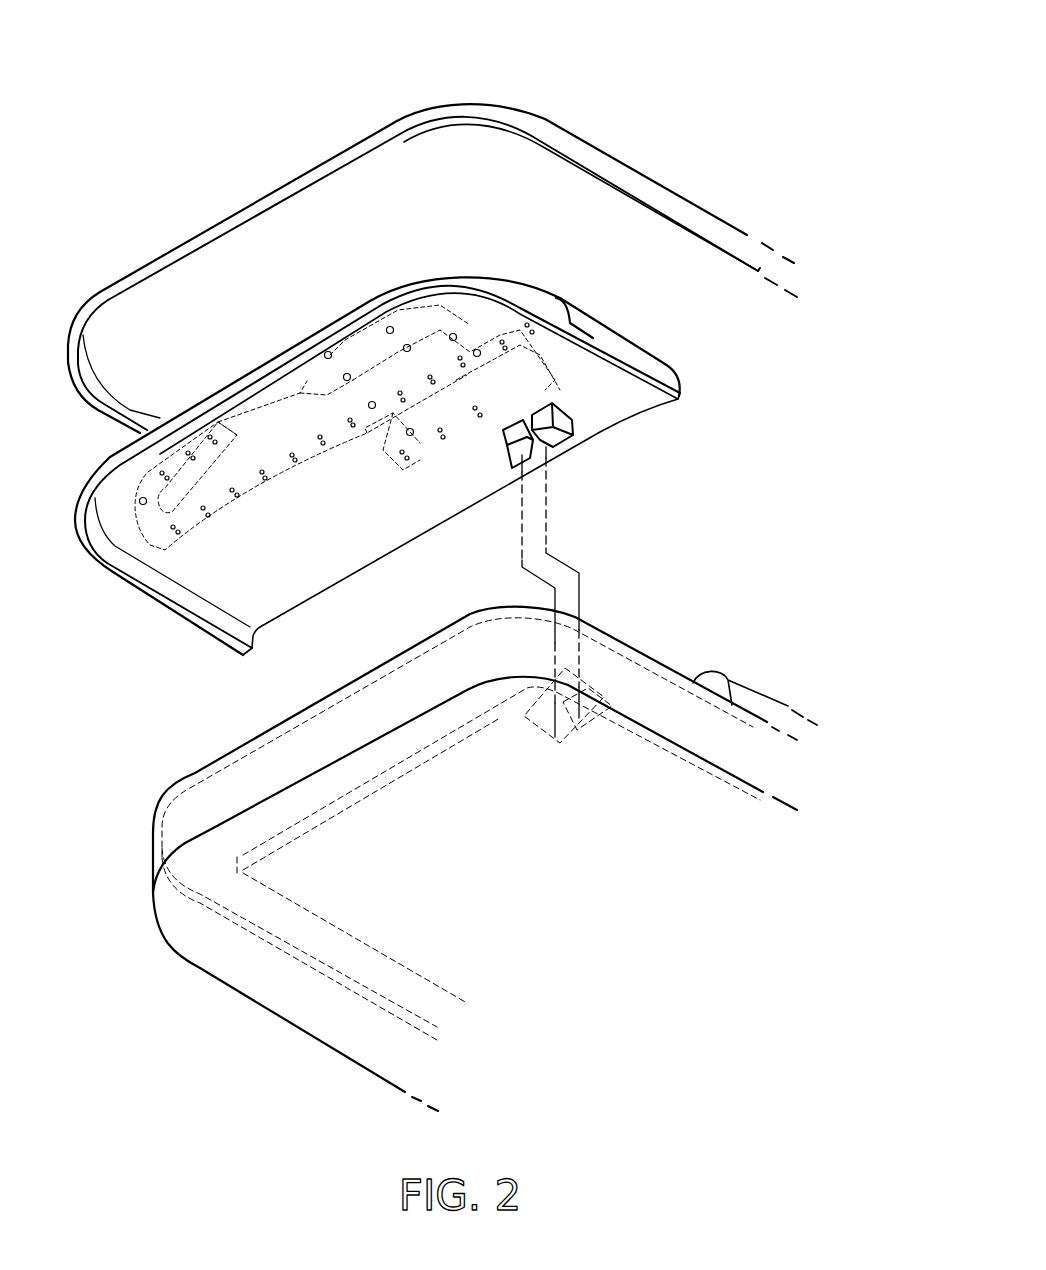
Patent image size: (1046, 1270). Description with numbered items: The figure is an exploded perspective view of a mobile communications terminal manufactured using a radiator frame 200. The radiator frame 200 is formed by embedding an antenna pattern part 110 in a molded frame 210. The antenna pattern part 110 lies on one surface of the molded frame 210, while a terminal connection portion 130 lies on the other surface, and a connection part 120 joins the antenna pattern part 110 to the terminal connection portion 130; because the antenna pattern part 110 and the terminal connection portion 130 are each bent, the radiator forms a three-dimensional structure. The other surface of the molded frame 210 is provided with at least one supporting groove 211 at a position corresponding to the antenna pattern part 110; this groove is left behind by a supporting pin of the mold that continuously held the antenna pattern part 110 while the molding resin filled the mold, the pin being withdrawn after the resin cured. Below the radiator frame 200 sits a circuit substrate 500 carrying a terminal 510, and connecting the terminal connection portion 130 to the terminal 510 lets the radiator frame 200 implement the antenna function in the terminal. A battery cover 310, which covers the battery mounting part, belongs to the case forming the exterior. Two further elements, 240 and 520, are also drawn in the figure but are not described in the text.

The antenna pattern part 110 is at (283, 462).
The connection part 120 is at (533, 400).
The terminal connection portion 130 is at (570, 430).
The radiator frame 200 is at (377, 333).
The molded frame 210 is at (273, 413).
The supporting groove 211 is at (480, 355).
The connector 240 is at (570, 430).
The battery cover 310 is at (620, 173).
The circuit substrate 500 is at (505, 829).
The terminal 510 is at (590, 717).
The housing bottom wall 520 is at (215, 963).